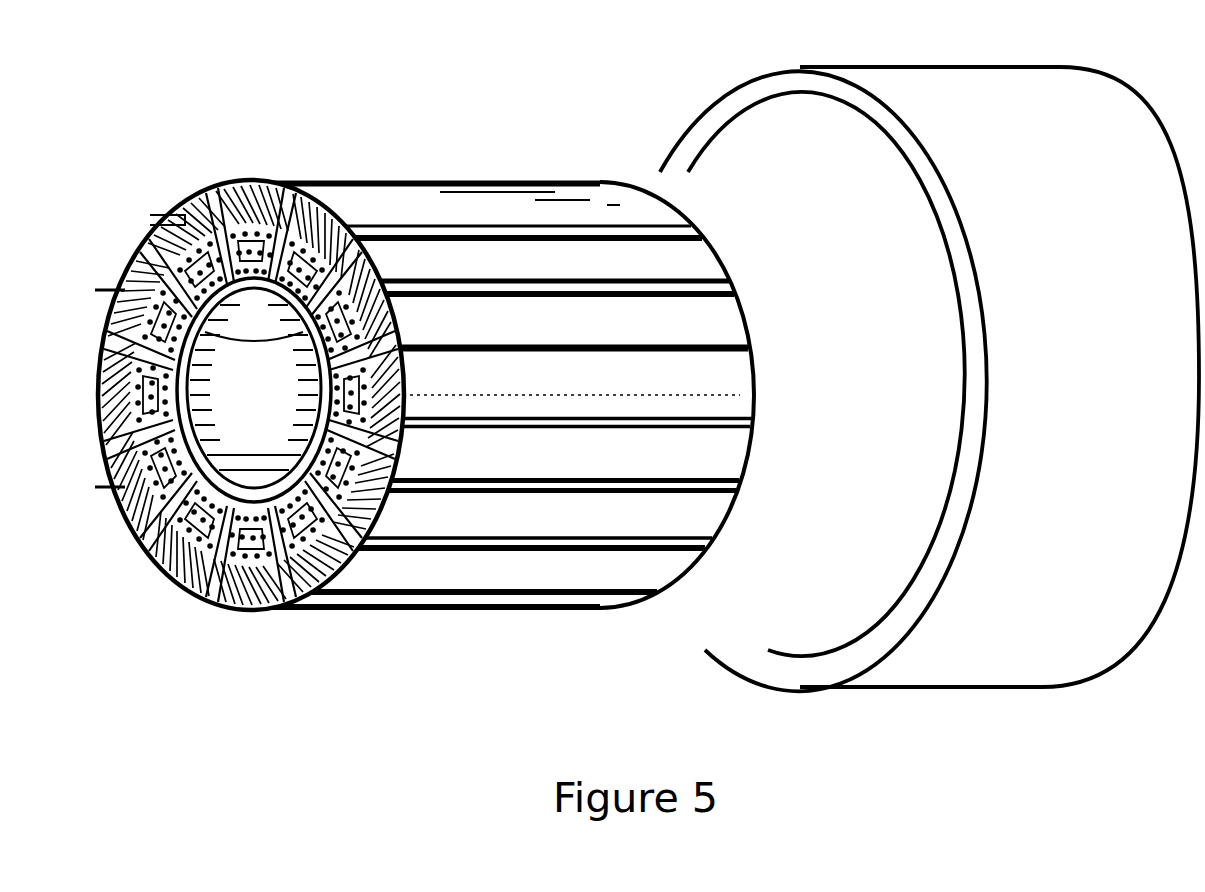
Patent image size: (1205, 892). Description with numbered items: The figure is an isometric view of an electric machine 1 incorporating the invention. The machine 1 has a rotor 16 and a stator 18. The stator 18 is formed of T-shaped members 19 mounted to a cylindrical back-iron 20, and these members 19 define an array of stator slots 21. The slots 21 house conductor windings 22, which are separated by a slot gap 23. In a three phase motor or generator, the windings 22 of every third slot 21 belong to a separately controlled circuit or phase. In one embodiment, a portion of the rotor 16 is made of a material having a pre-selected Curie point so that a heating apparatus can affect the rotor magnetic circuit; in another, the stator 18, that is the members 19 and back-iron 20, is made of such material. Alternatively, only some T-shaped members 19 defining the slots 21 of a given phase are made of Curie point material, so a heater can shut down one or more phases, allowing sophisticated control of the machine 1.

The machine 1 is at (530, 464).
The rotor 16 is at (983, 609).
The stator 18 is at (522, 568).
The T-shaped members 19 is at (558, 398).
The cylindrical back-iron 20 is at (202, 600).
The stator slots 21 is at (221, 235).
The conductor windings 22 is at (254, 390).
The slot gap 23 is at (512, 227).